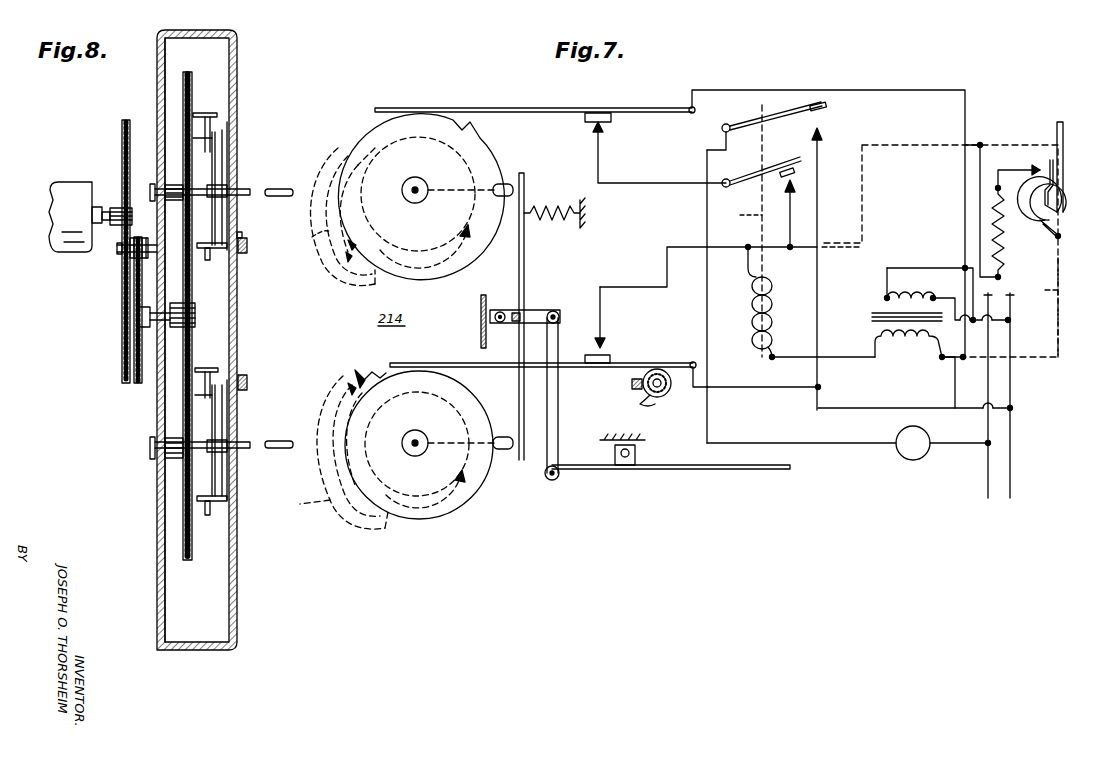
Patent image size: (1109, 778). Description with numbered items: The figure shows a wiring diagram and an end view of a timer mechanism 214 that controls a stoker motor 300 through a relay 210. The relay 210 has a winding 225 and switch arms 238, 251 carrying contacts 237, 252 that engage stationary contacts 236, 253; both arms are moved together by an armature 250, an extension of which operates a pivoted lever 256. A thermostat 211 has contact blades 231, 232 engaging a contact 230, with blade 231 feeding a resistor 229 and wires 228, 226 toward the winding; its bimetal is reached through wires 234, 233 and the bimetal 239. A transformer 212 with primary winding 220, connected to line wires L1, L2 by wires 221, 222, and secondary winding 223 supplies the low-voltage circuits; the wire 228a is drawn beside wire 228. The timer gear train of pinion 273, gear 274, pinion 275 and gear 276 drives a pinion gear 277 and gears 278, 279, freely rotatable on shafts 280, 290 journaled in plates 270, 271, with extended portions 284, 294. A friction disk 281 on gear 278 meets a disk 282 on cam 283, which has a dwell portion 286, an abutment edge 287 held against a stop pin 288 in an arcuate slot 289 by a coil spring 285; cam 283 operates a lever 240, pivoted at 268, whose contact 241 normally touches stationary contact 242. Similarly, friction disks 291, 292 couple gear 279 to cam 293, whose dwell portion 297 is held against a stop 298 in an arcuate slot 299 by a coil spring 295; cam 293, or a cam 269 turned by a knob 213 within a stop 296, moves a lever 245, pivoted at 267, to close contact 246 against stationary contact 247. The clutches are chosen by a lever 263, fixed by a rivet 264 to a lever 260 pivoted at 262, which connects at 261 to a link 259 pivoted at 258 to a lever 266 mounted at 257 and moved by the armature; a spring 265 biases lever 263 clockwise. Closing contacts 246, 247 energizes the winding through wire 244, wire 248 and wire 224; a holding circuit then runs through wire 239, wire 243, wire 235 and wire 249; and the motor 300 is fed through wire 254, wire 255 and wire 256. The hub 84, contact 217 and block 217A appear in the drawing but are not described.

In FIG. 7, the cam shaft hub 84 is at (414, 186).
In FIG. 7, the relay 210 is at (786, 310).
In FIG. 7, the thermostat 211 is at (1065, 202).
In FIG. 7, the transformer 212 is at (862, 319).
In FIG. 7, the knob 213 is at (640, 380).
In FIG. 8, the timer mechanism 214 is at (72, 167).
In FIG. 7, the thermostat contact 217 is at (1044, 146).
In FIG. 8, the control unit block 217A is at (58, 230).
In FIG. 7, the primary winding 220 is at (888, 285).
In FIG. 7, the wire 221 is at (945, 268).
In FIG. 7, the wire 222 is at (1003, 322).
In FIG. 7, the secondary winding 223 is at (872, 337).
In FIG. 7, the wire 224 is at (860, 377).
In FIG. 7, the winding 225 is at (755, 328).
In FIG. 7, the wire 226 is at (939, 251).
In FIG. 7, the wire 228 is at (979, 170).
In FIG. 7, the wire 228a is at (975, 185).
In FIG. 7, the resistor 229 is at (1002, 225).
In FIG. 7, the contact 230 is at (1001, 205).
In FIG. 7, the contact blade 231 is at (1042, 165).
In FIG. 7, the contact blade 232 is at (1063, 155).
In FIG. 7, the wire 233 is at (1038, 307).
In FIG. 7, the wire 234 is at (955, 375).
In FIG. 7, the wire 235 is at (785, 210).
In FIG. 7, the stationary contact 236 is at (798, 185).
In FIG. 7, the contact 237 is at (753, 182).
In FIG. 7, the switch arm 238 is at (748, 176).
In FIG. 7, the wire 239 is at (905, 90).
In FIG. 8, the lever 240 is at (217, 115).
In FIG. 7, the lever 240 is at (520, 108).
In FIG. 7, the contact 241 is at (610, 121).
In FIG. 7, the stationary contact 242 is at (584, 118).
In FIG. 7, the wire 243 is at (600, 150).
In FIG. 7, the wire 244 is at (905, 360).
In FIG. 8, the lever 245 is at (209, 367).
In FIG. 7, the lever 245 is at (440, 362).
In FIG. 7, the contact 246 is at (610, 358).
In FIG. 7, the stationary contact 247 is at (606, 344).
In FIG. 7, the wire 248 is at (666, 266).
In FIG. 7, the wire 249 is at (823, 310).
In FIG. 7, the armature 250 is at (738, 216).
In FIG. 7, the switch arm 251 is at (755, 120).
In FIG. 7, the contact 252 is at (826, 108).
In FIG. 7, the stationary contact 253 is at (823, 131).
In FIG. 7, the wire 254 is at (858, 410).
In FIG. 7, the wire 255 is at (860, 445).
In FIG. 7, the wire 256 is at (958, 445).
In FIG. 7, the pivot 257 is at (636, 455).
In FIG. 7, the pivot 258 is at (556, 480).
In FIG. 7, the link 259 is at (559, 412).
In FIG. 7, the lever 260 is at (518, 310).
In FIG. 7, the pivot 261 is at (560, 312).
In FIG. 7, the pivot 262 is at (500, 310).
In FIG. 7, the lever 263 is at (525, 248).
In FIG. 7, the rivet 264 is at (513, 324).
In FIG. 7, the spring 265 is at (555, 208).
In FIG. 7, the lever 266 is at (712, 470).
In FIG. 7, the pivot 267 is at (693, 360).
In FIG. 7, the pivot 268 is at (688, 112).
In FIG. 7, the cam 269 is at (631, 382).
In FIG. 8, the plate 270 is at (232, 600).
In FIG. 7, the plate 270 is at (338, 150).
In FIG. 8, the plate 271 is at (164, 598).
In FIG. 8, the pinion 273 is at (116, 206).
In FIG. 8, the gear 274 is at (121, 145).
In FIG. 8, the pinion 275 is at (130, 265).
In FIG. 8, the gear 276 is at (134, 296).
In FIG. 8, the pinion gear 277 is at (186, 318).
In FIG. 8, the gear 278 is at (194, 98).
In FIG. 8, the gear 279 is at (192, 556).
In FIG. 8, the shaft 280 is at (168, 183).
In FIG. 8, the friction disk 281 is at (200, 249).
In FIG. 8, the friction disk 282 is at (190, 138).
In FIG. 8, the cam 283 is at (217, 160).
In FIG. 7, the cam 283 is at (375, 136).
In FIG. 8, the extended portion 284 is at (250, 197).
In FIG. 7, the extended portion 284 is at (505, 183).
In FIG. 8, the coil spring 285 is at (224, 137).
In FIG. 7, the dwell portion 286 is at (475, 126).
In FIG. 8, the abutment edge 287 is at (229, 250).
In FIG. 7, the abutment edge 287 is at (347, 262).
In FIG. 8, the stop pin 288 is at (243, 246).
In FIG. 7, the stop pin 288 is at (348, 248).
In FIG. 7, the arcuate slot 289 is at (316, 234).
In FIG. 8, the shaft 290 is at (165, 458).
In FIG. 8, the friction disk 291 is at (196, 498).
In FIG. 8, the friction disk 292 is at (207, 508).
In FIG. 8, the cam 293 is at (227, 500).
In FIG. 7, the cam 293 is at (456, 518).
In FIG. 8, the extended portion 294 is at (292, 432).
In FIG. 7, the extended portion 294 is at (414, 436).
In FIG. 8, the coil spring 295 is at (224, 410).
In FIG. 7, the stop 296 is at (645, 400).
In FIG. 8, the dwell portion 297 is at (225, 394).
In FIG. 7, the dwell portion 297 is at (348, 384).
In FIG. 8, the stop 298 is at (248, 384).
In FIG. 7, the stop 298 is at (358, 370).
In FIG. 7, the arcuate slot 299 is at (318, 498).
In FIG. 7, the stoker motor 300 is at (905, 458).
In FIG. 7, the line wire L1 is at (986, 488).
In FIG. 7, the line wire L2 is at (1012, 488).